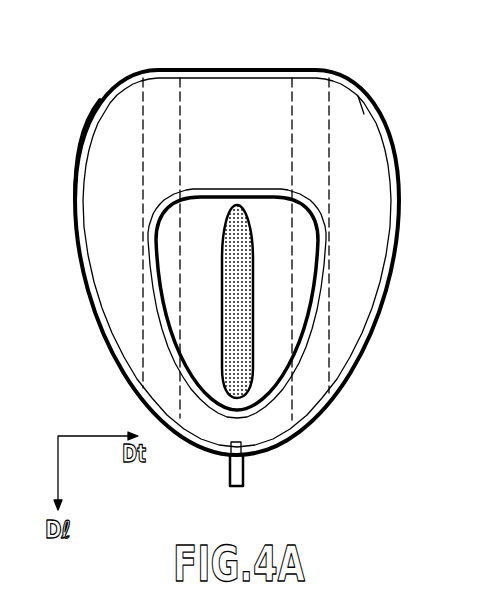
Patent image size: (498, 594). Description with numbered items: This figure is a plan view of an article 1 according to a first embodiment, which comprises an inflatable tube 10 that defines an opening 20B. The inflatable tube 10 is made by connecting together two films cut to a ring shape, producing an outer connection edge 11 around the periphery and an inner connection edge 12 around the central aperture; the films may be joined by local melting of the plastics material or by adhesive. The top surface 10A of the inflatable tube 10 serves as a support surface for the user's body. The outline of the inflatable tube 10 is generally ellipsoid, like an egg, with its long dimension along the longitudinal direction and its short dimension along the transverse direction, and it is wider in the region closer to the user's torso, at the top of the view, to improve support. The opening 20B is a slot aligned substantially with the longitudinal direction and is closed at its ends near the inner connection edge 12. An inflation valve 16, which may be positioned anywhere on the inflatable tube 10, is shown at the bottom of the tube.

The article 1 is at (88, 83).
The inflatable tube 10 is at (233, 67).
The top surface 10A is at (350, 137).
The outer connection edge 11 is at (87, 165).
The inner connection edge 12 is at (215, 191).
The opening 20B is at (235, 206).
The inflation valve 16 is at (246, 473).